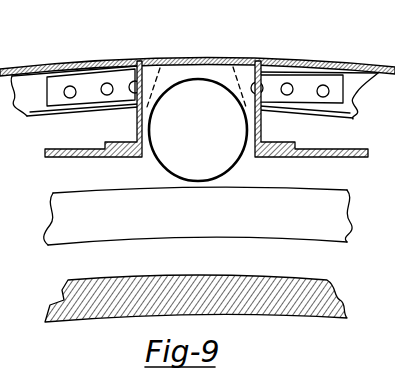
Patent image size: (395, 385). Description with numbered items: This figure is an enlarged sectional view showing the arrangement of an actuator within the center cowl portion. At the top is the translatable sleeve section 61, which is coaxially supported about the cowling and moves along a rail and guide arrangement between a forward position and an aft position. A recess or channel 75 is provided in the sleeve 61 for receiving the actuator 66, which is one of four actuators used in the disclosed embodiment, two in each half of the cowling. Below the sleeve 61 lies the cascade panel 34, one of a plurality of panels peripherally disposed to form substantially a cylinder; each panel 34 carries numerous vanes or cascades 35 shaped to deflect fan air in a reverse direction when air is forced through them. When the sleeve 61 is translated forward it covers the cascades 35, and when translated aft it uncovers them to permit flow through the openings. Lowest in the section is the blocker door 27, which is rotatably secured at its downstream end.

The recess or channel 75 is at (186, 80).
The actuator 66 is at (205, 125).
The translatable sleeve section 61 is at (355, 117).
The vane or cascade 35 is at (213, 207).
The cascade panel 34 is at (328, 190).
The blocker door 27 is at (97, 300).